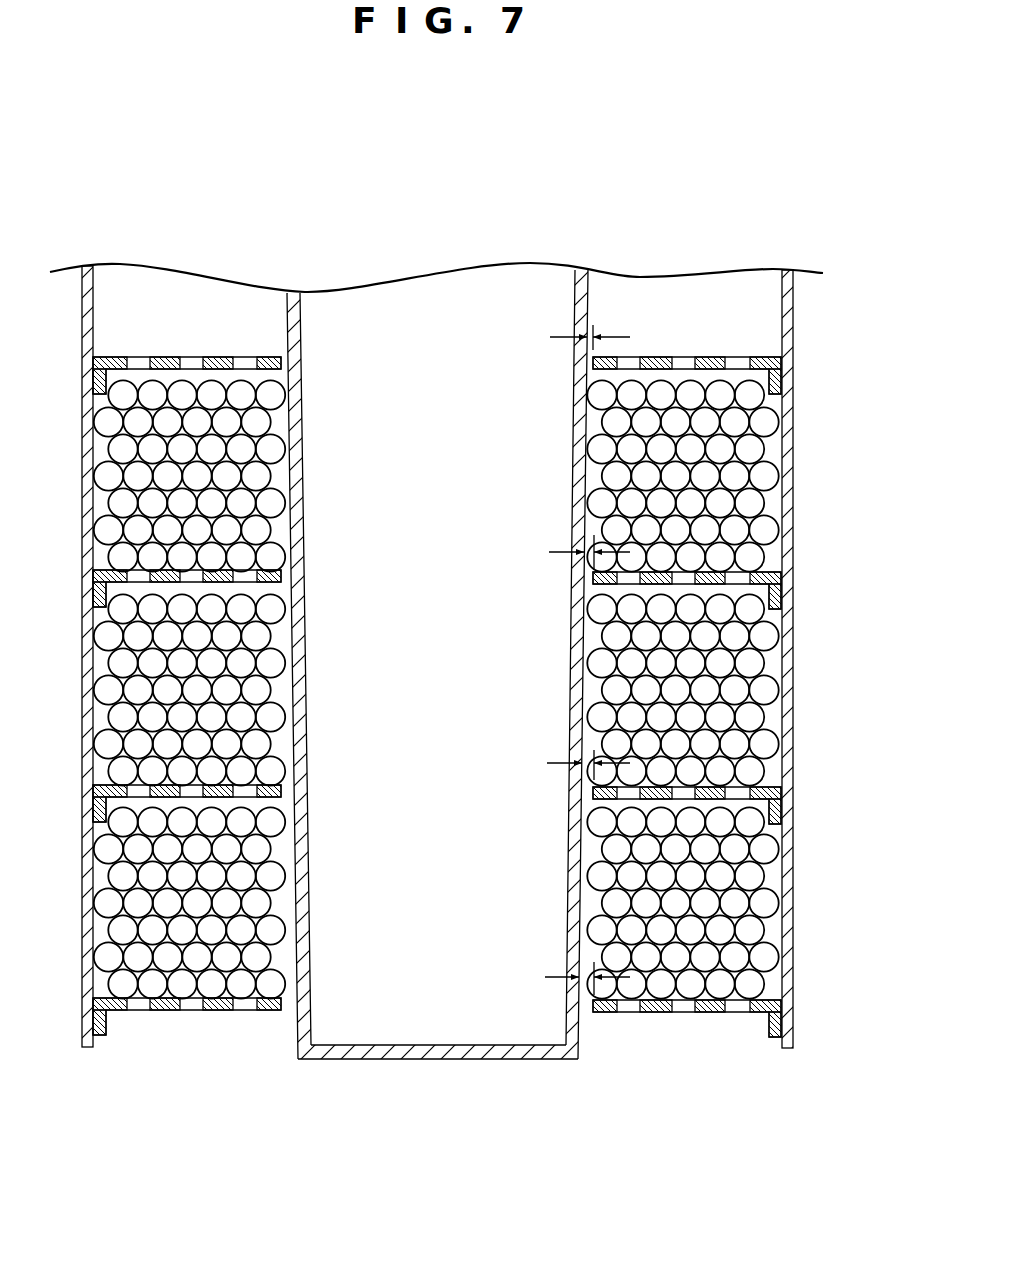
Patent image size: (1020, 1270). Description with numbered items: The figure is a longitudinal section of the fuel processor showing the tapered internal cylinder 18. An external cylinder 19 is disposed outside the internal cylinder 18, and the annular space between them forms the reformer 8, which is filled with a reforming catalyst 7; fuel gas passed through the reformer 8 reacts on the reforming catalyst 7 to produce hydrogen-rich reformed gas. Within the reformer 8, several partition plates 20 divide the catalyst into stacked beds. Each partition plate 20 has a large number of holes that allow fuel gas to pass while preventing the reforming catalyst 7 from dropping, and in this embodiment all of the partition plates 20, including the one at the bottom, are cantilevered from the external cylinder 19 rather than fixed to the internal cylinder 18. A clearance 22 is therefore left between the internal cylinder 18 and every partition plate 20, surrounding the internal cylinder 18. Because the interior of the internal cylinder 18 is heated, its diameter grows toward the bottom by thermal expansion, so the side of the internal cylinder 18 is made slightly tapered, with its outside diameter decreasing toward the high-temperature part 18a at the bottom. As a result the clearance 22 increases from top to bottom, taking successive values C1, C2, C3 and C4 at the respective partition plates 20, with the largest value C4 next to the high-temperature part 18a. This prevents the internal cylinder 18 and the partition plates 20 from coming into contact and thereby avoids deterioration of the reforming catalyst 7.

The reforming catalyst 7 is at (757, 453).
The reformer 8 is at (156, 347).
The internal cylinder 18 is at (437, 706).
The high-temperature part 18a is at (375, 1052).
The external cylinder 19 is at (89, 1043).
The partition plate 20 is at (783, 366).
The clearance 22 is at (593, 325).
The clearance value C1 is at (586, 326).
The clearance value C2 is at (587, 548).
The clearance value C3 is at (581, 759).
The clearance value C4 is at (581, 973).